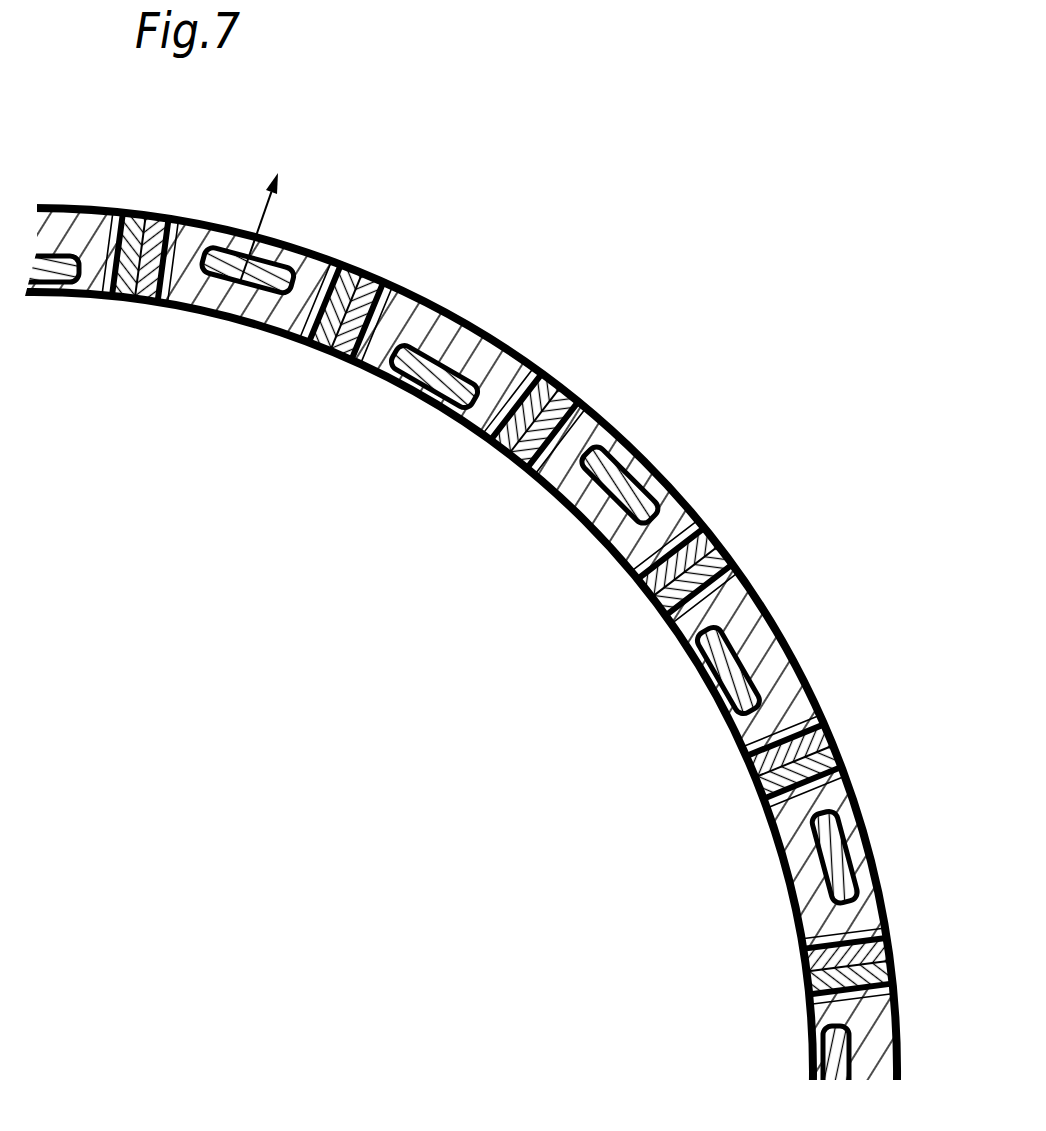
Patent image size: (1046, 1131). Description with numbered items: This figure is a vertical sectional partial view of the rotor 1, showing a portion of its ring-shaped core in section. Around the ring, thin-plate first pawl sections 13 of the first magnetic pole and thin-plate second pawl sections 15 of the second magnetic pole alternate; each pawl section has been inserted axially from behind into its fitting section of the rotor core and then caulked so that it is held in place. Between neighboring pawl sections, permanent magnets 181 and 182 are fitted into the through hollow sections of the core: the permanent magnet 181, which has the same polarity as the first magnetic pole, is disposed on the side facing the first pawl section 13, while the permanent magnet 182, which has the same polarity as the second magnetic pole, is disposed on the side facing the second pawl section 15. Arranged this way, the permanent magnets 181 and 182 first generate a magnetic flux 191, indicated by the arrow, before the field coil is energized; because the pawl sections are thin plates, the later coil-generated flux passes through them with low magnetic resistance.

The rotor 1 is at (664, 332).
The first pawl section 13 is at (297, 243).
The second pawl section 15 is at (62, 298).
The permanent magnet 181 is at (147, 297).
The permanent magnet 182 is at (127, 297).
The magnetic flux 191 is at (277, 205).